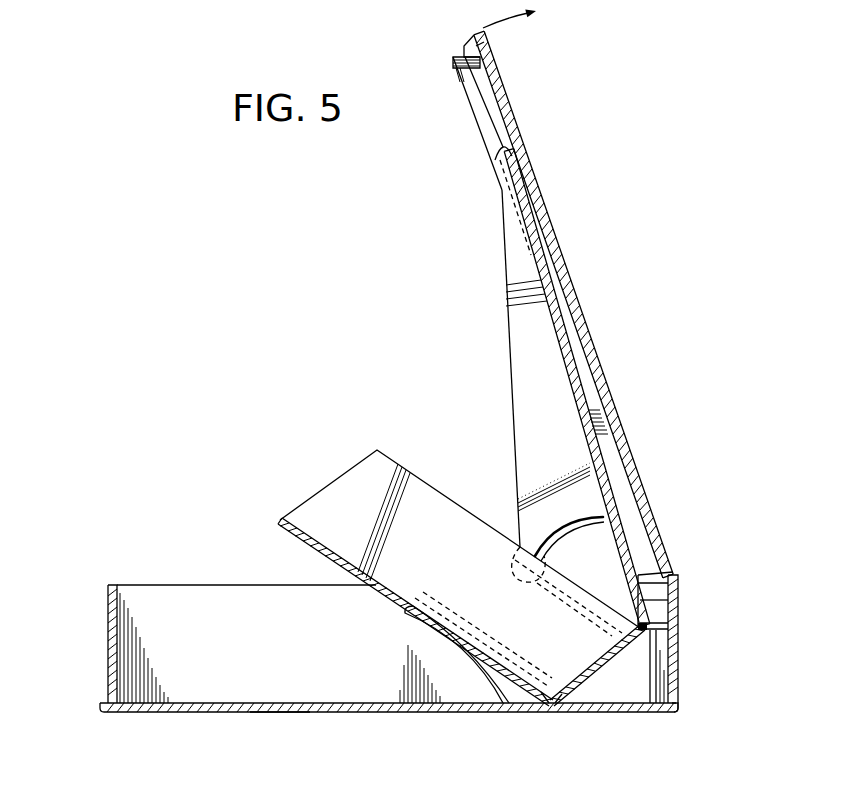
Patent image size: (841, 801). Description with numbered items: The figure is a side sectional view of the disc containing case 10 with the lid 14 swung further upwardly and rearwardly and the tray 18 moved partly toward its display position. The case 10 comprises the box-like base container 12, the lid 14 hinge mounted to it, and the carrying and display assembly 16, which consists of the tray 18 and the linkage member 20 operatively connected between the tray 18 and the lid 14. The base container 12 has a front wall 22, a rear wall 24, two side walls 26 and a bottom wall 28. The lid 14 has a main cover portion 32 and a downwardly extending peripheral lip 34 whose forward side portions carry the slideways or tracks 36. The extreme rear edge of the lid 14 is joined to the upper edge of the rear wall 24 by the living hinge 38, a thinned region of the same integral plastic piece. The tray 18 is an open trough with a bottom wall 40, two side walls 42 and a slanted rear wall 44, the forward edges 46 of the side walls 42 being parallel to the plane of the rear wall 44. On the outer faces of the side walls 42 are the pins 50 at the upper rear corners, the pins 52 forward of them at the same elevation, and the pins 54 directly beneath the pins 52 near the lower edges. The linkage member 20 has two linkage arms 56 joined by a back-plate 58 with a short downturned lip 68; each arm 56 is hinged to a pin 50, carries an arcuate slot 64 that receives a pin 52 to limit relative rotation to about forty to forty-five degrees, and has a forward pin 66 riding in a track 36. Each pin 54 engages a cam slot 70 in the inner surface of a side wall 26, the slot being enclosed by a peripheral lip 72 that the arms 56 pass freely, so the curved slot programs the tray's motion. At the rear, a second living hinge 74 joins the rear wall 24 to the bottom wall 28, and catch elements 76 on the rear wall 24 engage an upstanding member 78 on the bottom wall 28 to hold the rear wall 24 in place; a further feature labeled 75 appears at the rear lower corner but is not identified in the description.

The disc containing case 10 is at (600, 197).
The base container 12 is at (352, 710).
The lid 14 is at (600, 355).
The carrying and display assembly 16 is at (497, 447).
The tray 18 is at (417, 473).
The linkage member 20 is at (502, 313).
The front wall 22 is at (108, 617).
The rear wall 24 is at (680, 670).
The side walls 26 is at (265, 651).
The bottom wall 28 is at (282, 713).
The main cover portion 32 is at (580, 305).
The peripheral lip 34 is at (463, 53).
The slideways or tracks 36 is at (490, 113).
The hinge 38 is at (668, 578).
The bottom wall 40 is at (313, 543).
The side walls 42 is at (443, 566).
The rear wall 44 is at (598, 672).
The forward edges 46 is at (336, 482).
The pins of the first pair 50 is at (612, 638).
The pins of the second pair 52 is at (515, 522).
The pins of the third pair 54 is at (506, 646).
The linkage arms 56 is at (509, 257).
The back-plate 58 is at (553, 288).
The arcuate slot 64 is at (562, 534).
The pin 66 is at (503, 158).
The downturned lip 68 is at (652, 630).
The cam slot 70 is at (507, 712).
The peripheral lip 72 is at (408, 622).
The second living hinge 74 is at (550, 705).
The corner 75 is at (678, 707).
The catch elements 76 is at (657, 622).
The upstanding member 78 is at (660, 705).